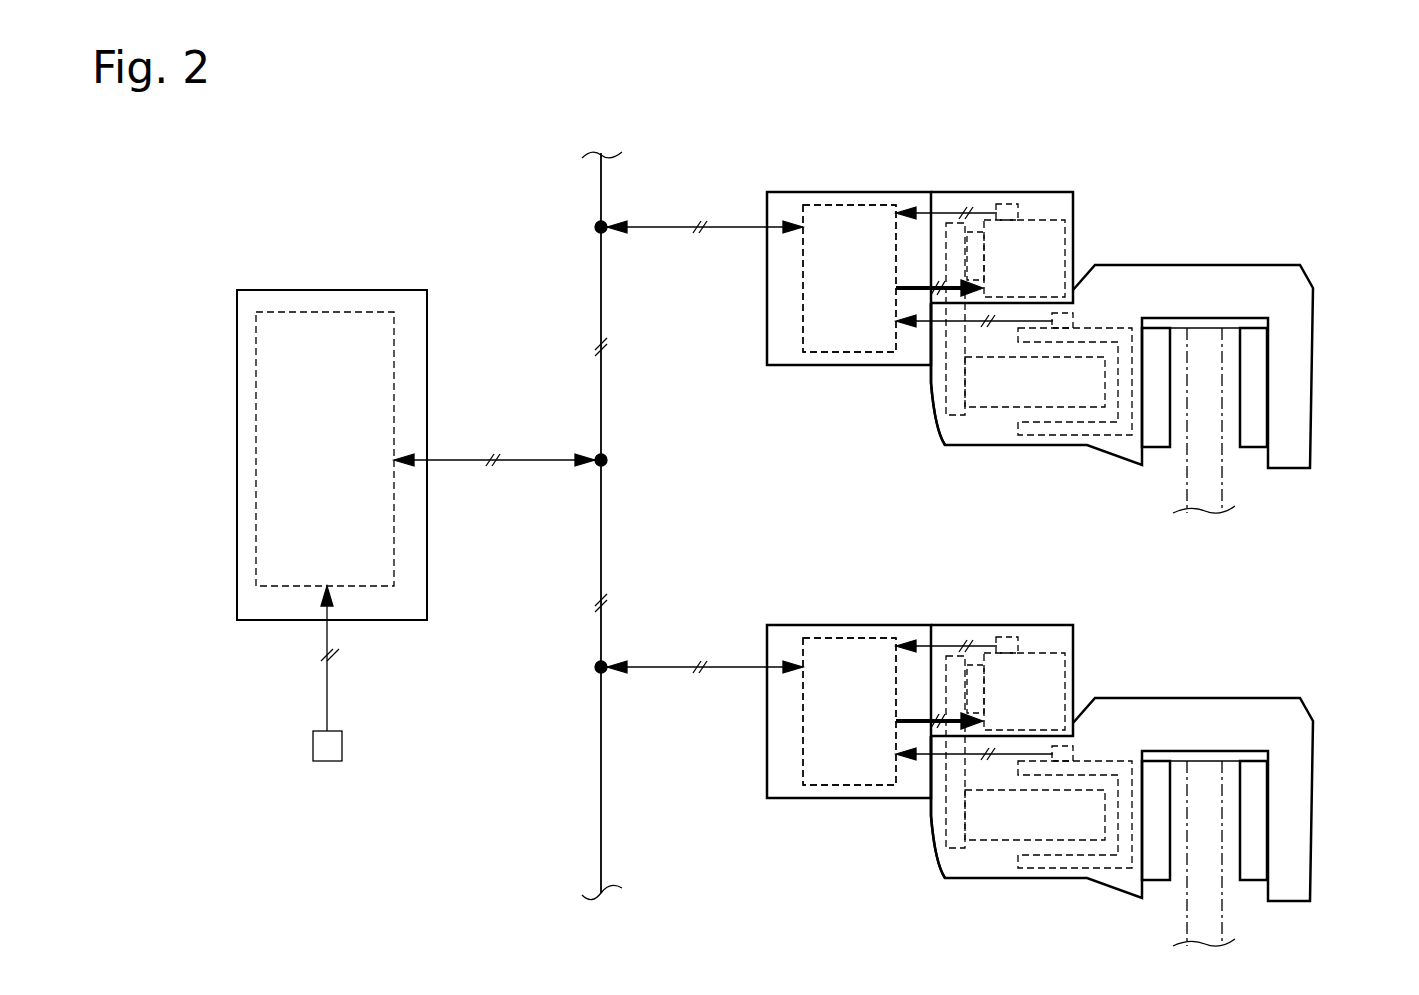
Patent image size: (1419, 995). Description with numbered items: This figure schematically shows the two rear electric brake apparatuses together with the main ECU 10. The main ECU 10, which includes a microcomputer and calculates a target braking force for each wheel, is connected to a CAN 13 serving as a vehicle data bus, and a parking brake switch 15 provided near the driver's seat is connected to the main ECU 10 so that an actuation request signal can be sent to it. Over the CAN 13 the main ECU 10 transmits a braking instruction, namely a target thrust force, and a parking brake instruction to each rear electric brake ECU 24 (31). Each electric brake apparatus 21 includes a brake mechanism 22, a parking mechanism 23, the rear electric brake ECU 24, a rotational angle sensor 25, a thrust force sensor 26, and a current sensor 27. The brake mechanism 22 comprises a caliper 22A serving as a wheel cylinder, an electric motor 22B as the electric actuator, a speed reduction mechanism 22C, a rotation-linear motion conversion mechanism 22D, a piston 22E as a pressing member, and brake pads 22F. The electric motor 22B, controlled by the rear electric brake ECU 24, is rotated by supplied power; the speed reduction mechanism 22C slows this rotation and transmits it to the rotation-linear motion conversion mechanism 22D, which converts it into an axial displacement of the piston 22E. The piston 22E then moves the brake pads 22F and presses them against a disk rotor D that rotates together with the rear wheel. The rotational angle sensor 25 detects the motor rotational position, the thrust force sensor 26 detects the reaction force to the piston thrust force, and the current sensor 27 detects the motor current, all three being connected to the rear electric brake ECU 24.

The main ECU 10 is at (321, 312).
The CAN 13 is at (601, 533).
The parking brake switch 15 is at (328, 745).
The electric brake apparatus 21 is at (1100, 210).
The brake mechanism 22 is at (1266, 250).
The caliper 22A is at (1130, 302).
The electric motor 22B is at (1043, 218).
The speed reduction mechanism 22C is at (946, 373).
The rotation-linear motion conversion mechanism 22D is at (998, 408).
The piston 22E is at (1060, 435).
The brake pads 22F is at (1152, 357).
The parking mechanism 23 is at (968, 223).
The rear electric brake ECU 24 is at (848, 205).
The controller 31 is at (849, 495).
The rotational angle sensor 25 is at (1005, 204).
The thrust force sensor 26 is at (1077, 315).
The current sensor 27 is at (912, 295).
The disk rotor D is at (1222, 498).